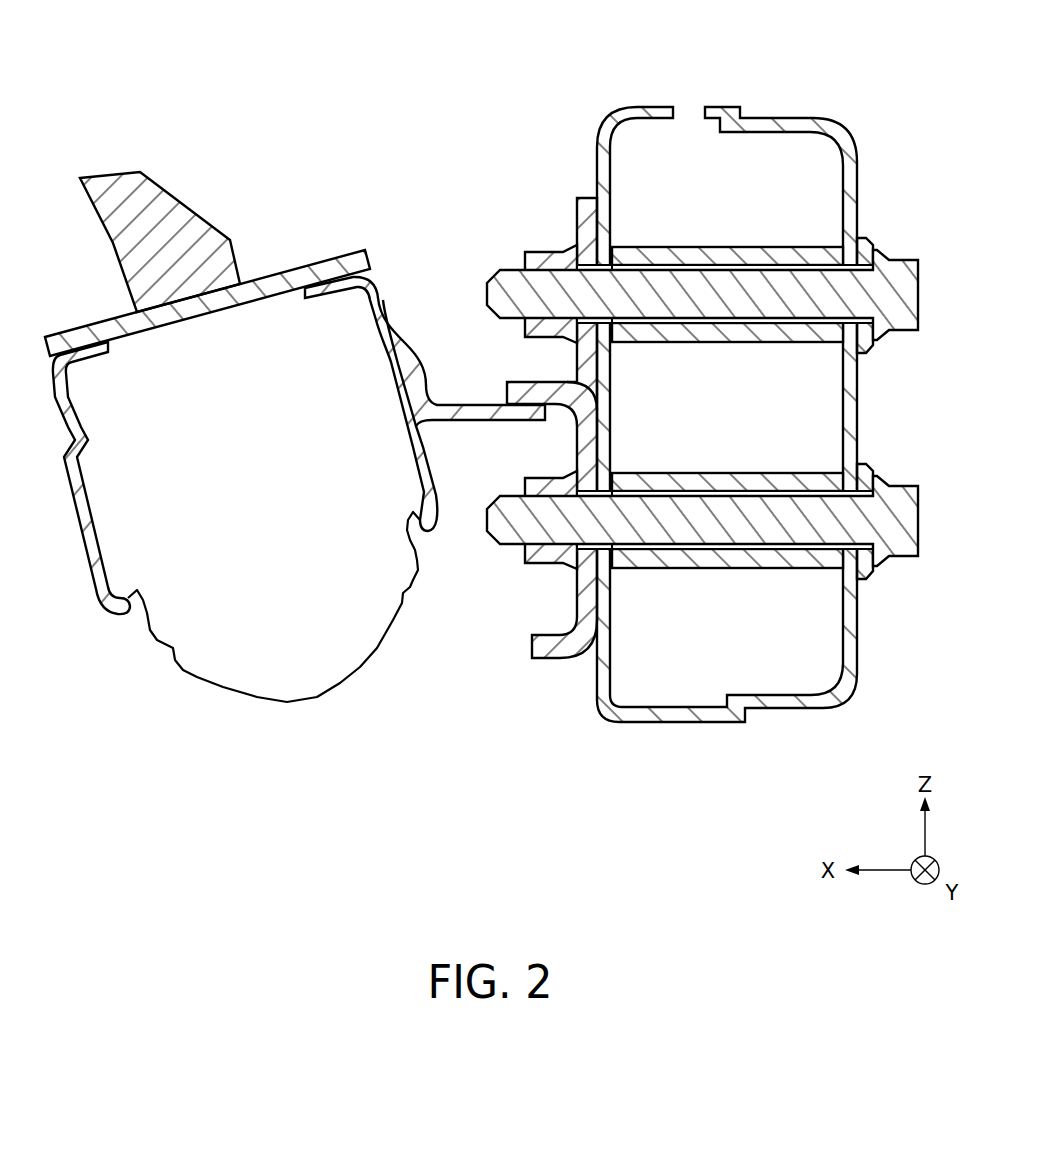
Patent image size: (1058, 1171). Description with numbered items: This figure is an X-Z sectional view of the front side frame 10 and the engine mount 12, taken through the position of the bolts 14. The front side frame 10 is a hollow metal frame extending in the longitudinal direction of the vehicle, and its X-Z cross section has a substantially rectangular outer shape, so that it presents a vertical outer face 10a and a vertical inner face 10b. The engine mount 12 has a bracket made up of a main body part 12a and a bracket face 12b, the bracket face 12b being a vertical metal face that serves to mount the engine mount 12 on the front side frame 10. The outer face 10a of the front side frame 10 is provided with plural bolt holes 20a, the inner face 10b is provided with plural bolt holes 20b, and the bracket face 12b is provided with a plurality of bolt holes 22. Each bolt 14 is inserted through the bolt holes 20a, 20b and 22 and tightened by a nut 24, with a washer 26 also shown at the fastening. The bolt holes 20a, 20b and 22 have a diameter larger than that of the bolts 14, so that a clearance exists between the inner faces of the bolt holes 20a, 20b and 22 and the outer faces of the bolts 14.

The front side frame 10 is at (724, 364).
The outer face 10a is at (858, 201).
The inner face 10b is at (597, 182).
The engine mount 12 is at (321, 406).
The main body part 12a is at (357, 236).
The bracket face 12b is at (577, 363).
The bolt 14 is at (920, 293).
The bolt hole 20a is at (847, 272).
The bolt hole 20b is at (608, 272).
The bolt hole 22 is at (586, 272).
The nut 24 is at (524, 262).
The washer 26 is at (863, 226).